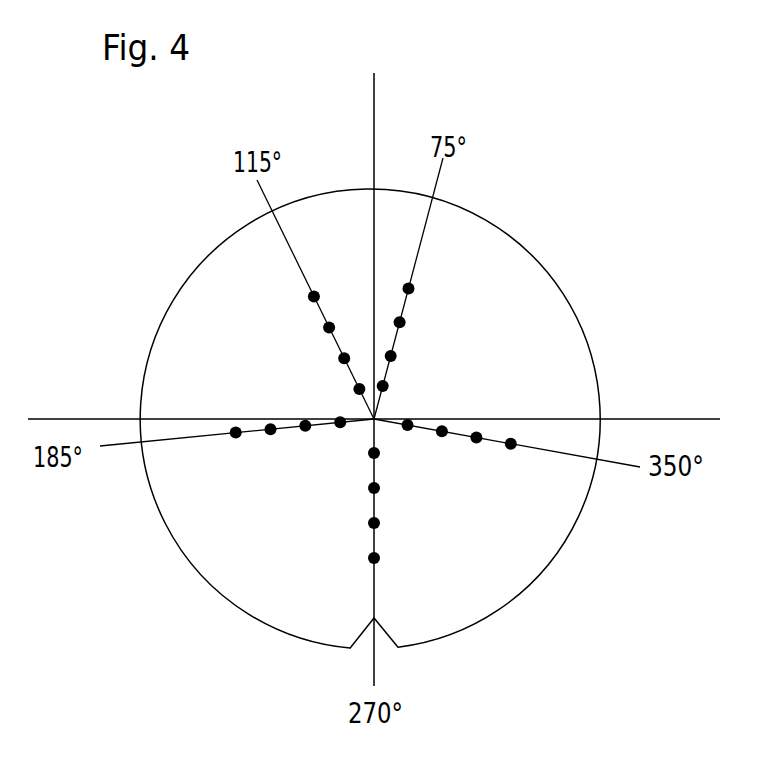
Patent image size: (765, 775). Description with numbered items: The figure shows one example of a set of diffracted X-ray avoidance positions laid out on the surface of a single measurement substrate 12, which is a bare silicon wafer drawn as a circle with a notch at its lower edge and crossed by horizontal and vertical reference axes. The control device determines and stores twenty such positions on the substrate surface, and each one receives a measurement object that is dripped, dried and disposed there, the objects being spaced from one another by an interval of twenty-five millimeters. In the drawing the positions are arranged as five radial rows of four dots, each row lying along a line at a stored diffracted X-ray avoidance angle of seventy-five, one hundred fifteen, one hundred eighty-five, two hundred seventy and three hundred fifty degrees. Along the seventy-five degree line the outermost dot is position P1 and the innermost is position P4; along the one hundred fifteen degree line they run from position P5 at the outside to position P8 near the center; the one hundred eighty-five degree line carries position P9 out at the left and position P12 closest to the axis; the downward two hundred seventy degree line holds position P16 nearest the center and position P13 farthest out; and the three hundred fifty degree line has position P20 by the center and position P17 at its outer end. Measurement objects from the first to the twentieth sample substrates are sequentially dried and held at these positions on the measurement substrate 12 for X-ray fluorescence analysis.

The measurement substrate 12 is at (540, 262).
The diffracted X-ray avoidance position P1 is at (428, 348).
The diffracted X-ray avoidance position P4 is at (403, 375).
The diffracted X-ray avoidance position P5 is at (318, 375).
The diffracted X-ray avoidance position P8 is at (337, 400).
The diffracted X-ray avoidance position P9 is at (307, 455).
The diffracted X-ray avoidance position P12 is at (342, 443).
The diffracted X-ray avoidance position P13 is at (400, 562).
The diffracted X-ray avoidance position P16 is at (412, 528).
The diffracted X-ray avoidance position P17 is at (457, 407).
The diffracted X-ray avoidance position P20 is at (423, 408).